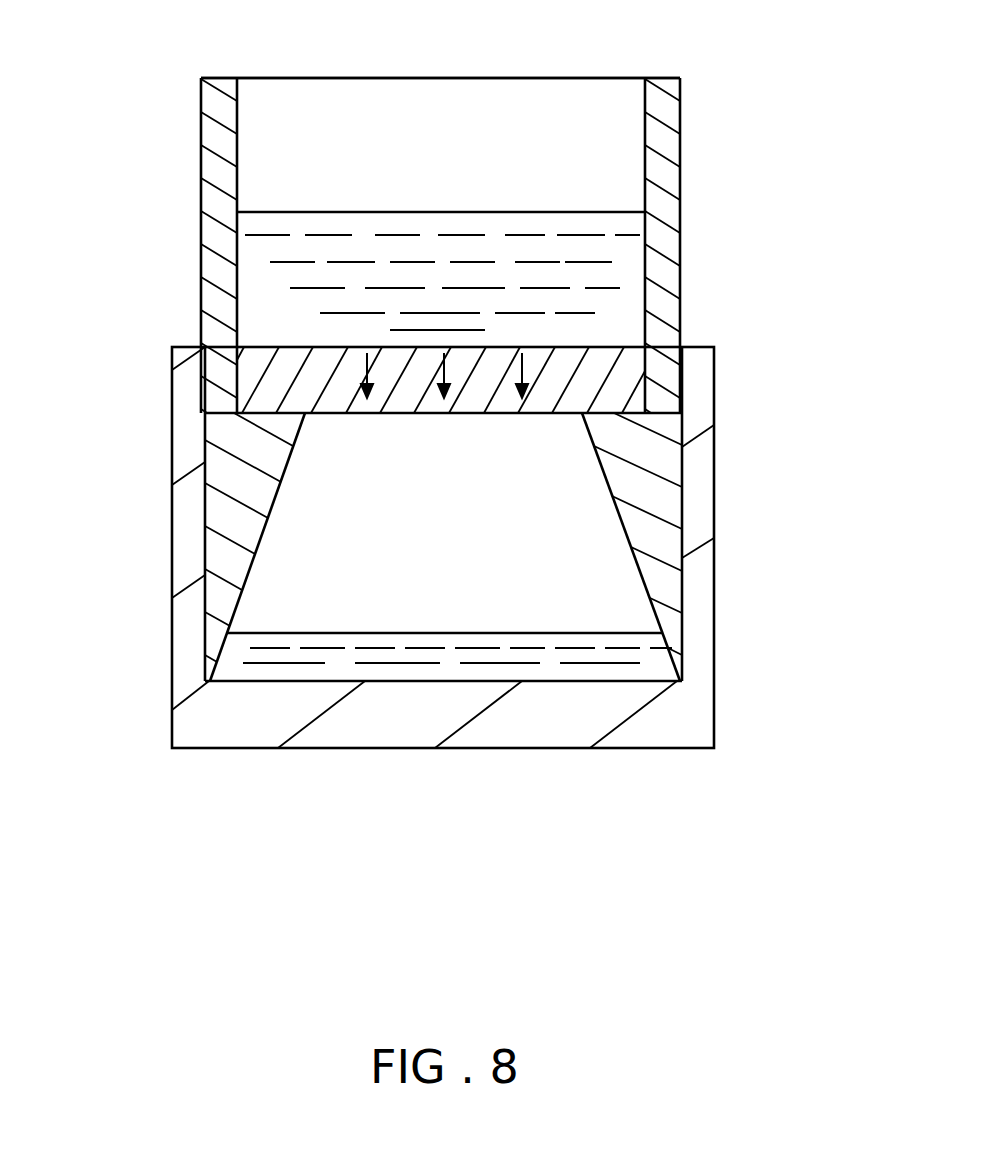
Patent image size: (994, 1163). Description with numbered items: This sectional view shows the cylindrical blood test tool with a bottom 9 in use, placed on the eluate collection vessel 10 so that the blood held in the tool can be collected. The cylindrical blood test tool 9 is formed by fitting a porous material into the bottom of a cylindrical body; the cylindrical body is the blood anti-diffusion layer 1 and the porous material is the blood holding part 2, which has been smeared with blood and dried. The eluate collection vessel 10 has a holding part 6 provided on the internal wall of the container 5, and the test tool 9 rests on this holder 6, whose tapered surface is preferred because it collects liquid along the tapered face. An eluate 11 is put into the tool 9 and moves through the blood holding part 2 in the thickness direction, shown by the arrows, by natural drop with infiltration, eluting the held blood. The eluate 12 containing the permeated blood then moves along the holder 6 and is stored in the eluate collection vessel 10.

The blood anti-diffusion layer 1 is at (220, 146).
The blood holding part 2 is at (580, 372).
The container 5 is at (437, 749).
The holding part 6 is at (250, 497).
The cylindrical blood test tool with a bottom 9 is at (844, 110).
The eluate collection vessel 10 is at (842, 436).
The eluate 11 is at (270, 278).
The eluate containing the permeated blood 12 is at (240, 674).